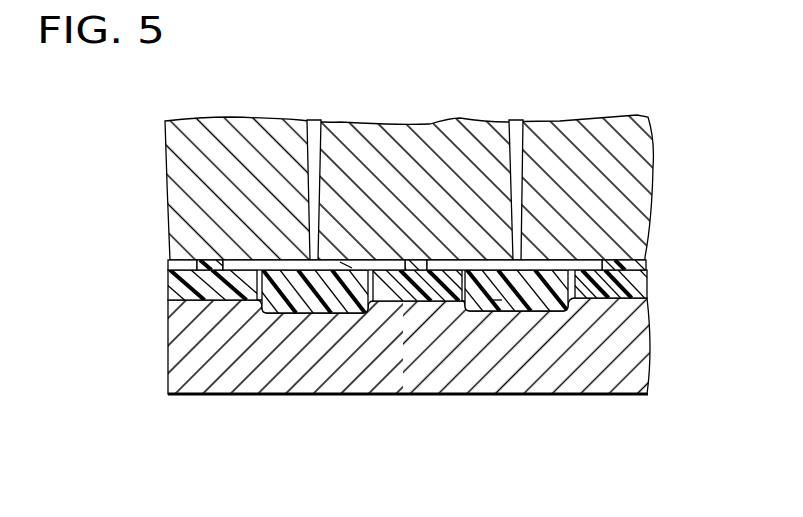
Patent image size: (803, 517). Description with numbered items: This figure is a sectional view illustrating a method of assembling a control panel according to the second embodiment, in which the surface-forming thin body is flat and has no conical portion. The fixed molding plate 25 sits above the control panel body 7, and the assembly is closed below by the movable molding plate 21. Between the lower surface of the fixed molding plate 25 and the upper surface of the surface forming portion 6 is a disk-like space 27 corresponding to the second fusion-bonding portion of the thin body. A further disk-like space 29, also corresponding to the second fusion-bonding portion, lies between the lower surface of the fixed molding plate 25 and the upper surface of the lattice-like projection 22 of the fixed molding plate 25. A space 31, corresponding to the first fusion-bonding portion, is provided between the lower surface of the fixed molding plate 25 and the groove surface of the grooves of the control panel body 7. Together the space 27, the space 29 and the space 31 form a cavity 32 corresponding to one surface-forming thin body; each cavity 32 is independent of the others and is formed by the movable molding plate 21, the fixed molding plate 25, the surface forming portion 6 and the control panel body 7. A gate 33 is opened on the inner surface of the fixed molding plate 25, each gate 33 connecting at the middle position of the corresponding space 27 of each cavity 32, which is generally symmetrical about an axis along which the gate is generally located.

The fixed molding plate 25 is at (640, 171).
The gate 33 is at (308, 244).
The movable molding plate 21 is at (592, 370).
The control panel body 7 is at (638, 282).
The surface forming portion 6 is at (315, 302).
The space 31 is at (233, 258).
The space 29 is at (592, 256).
The cavity 32 is at (347, 262).
The lattice-like projection 22 is at (260, 303).
The space 27 is at (497, 300).